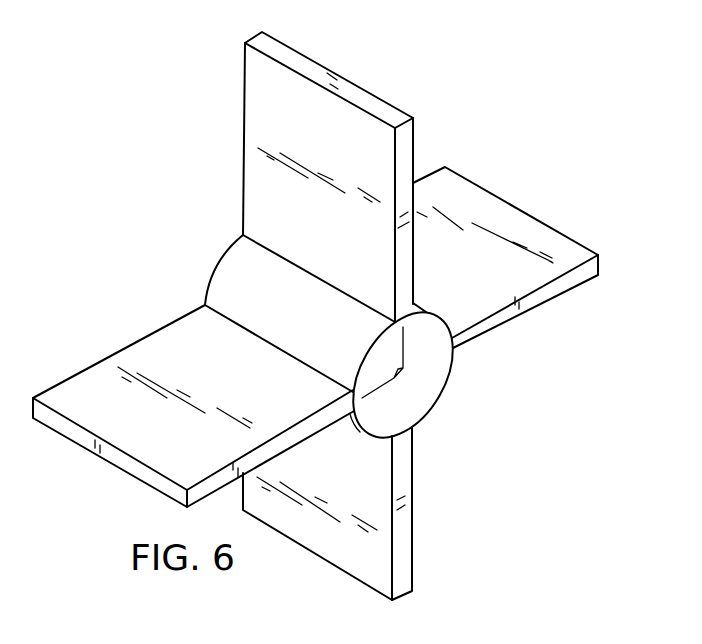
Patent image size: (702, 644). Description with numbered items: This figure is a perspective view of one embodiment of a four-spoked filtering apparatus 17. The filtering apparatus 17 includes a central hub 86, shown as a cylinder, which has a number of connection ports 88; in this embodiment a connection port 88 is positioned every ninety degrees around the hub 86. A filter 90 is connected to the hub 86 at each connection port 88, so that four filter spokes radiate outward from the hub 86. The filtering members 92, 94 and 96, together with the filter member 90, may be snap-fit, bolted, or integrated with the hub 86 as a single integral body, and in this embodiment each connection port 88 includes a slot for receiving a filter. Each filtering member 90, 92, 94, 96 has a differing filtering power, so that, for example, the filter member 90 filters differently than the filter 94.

The filtering apparatus 17 is at (444, 127).
The hub 86 is at (441, 363).
The connection port 88 is at (316, 279).
The filter member 90 is at (198, 447).
The filtering member 92 is at (344, 476).
The filter 94 is at (475, 287).
The filtering member 96 is at (341, 150).